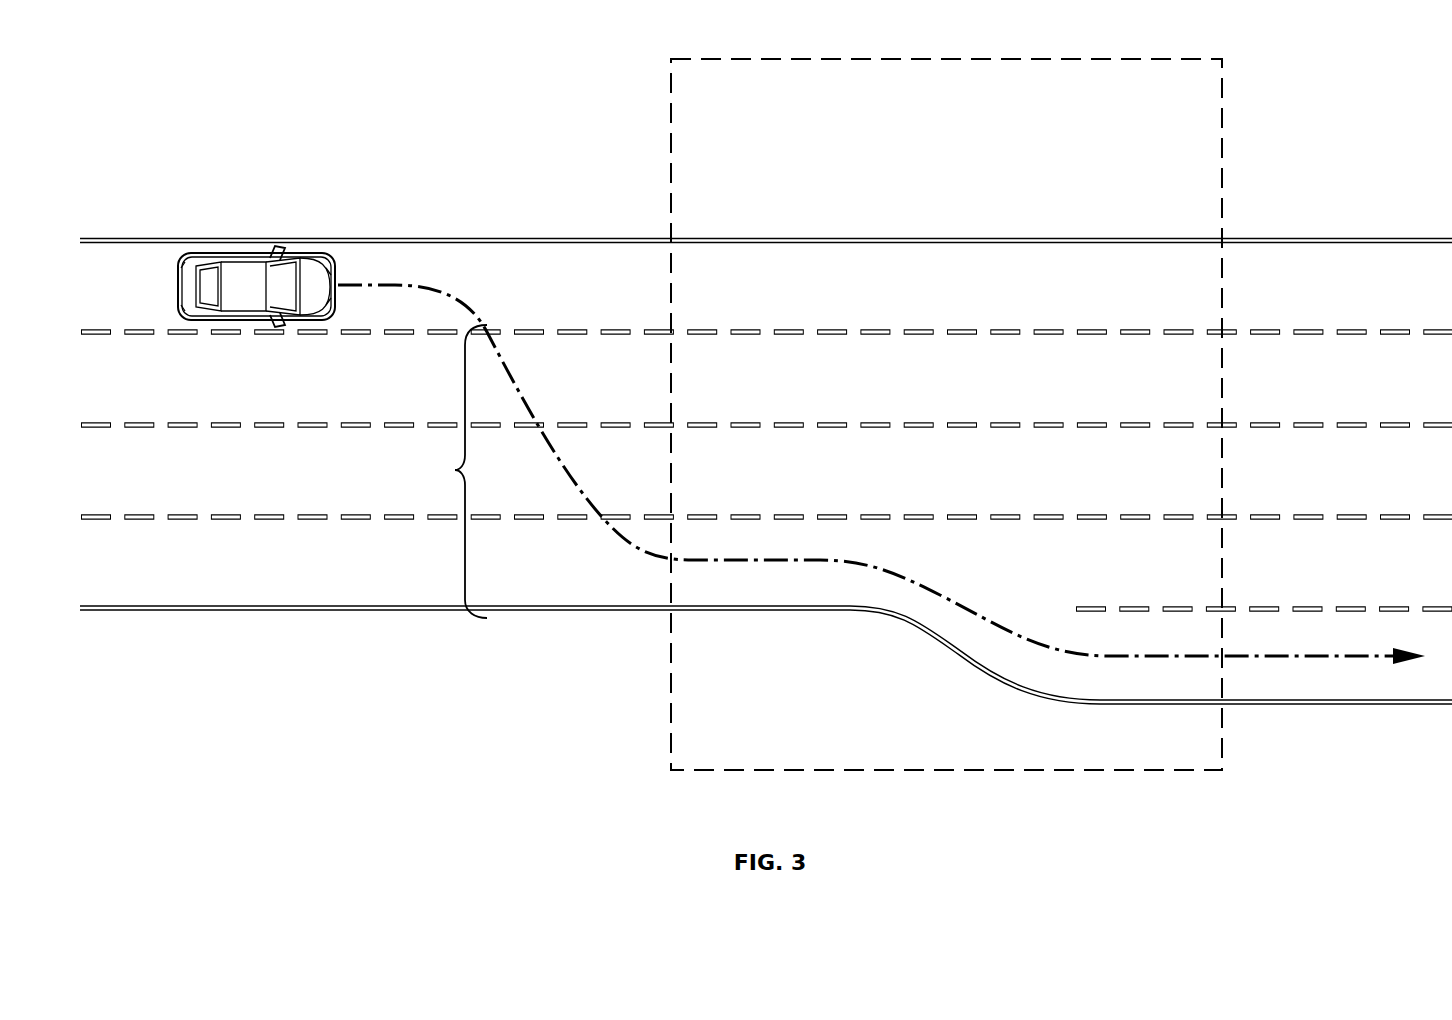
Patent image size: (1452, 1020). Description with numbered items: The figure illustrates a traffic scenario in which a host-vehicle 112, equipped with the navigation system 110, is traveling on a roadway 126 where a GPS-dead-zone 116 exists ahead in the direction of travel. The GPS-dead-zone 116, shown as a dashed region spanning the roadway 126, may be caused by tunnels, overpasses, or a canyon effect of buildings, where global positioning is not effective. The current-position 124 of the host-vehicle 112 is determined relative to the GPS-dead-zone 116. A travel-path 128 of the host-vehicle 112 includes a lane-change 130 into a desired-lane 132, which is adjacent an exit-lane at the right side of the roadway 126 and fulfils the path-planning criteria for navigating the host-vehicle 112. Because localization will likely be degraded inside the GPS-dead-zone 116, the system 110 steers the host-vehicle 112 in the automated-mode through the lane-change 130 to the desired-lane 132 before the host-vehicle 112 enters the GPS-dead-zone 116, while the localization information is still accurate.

The navigation system 110 is at (256, 300).
The host-vehicle 112 is at (262, 254).
The GPS-dead-zone 116 is at (684, 103).
The current-position 124 is at (212, 222).
The roadway 126 is at (220, 580).
The travel-path 128 is at (1316, 659).
The lane-change 130 is at (455, 470).
The desired-lane 132 is at (627, 585).